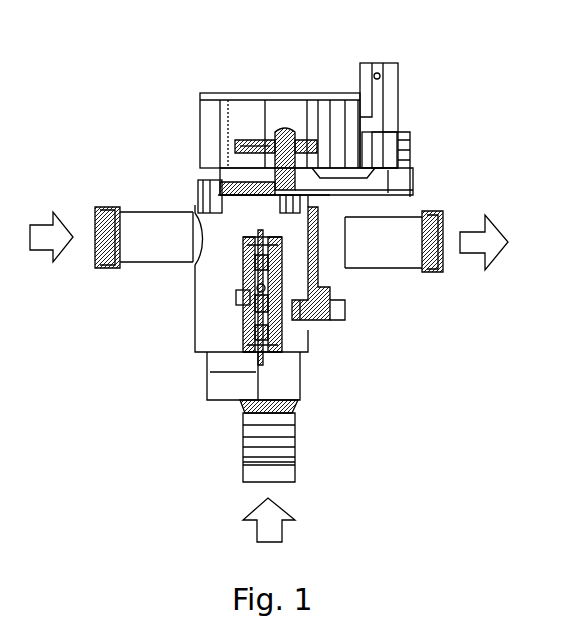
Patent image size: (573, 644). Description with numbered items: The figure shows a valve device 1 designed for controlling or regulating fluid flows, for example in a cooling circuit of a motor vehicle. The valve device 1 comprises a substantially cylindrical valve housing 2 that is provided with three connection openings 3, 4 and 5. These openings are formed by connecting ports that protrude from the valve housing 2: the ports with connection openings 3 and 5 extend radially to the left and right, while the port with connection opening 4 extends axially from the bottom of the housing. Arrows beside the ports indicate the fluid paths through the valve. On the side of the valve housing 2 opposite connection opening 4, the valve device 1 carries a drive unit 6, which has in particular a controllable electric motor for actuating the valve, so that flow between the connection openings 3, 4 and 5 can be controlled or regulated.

The valve device 1 is at (108, 50).
The valve housing 2 is at (297, 342).
The connection opening 3 is at (95, 258).
The connection opening 4 is at (290, 483).
The connection opening 5 is at (445, 263).
The drive unit 6 is at (335, 92).